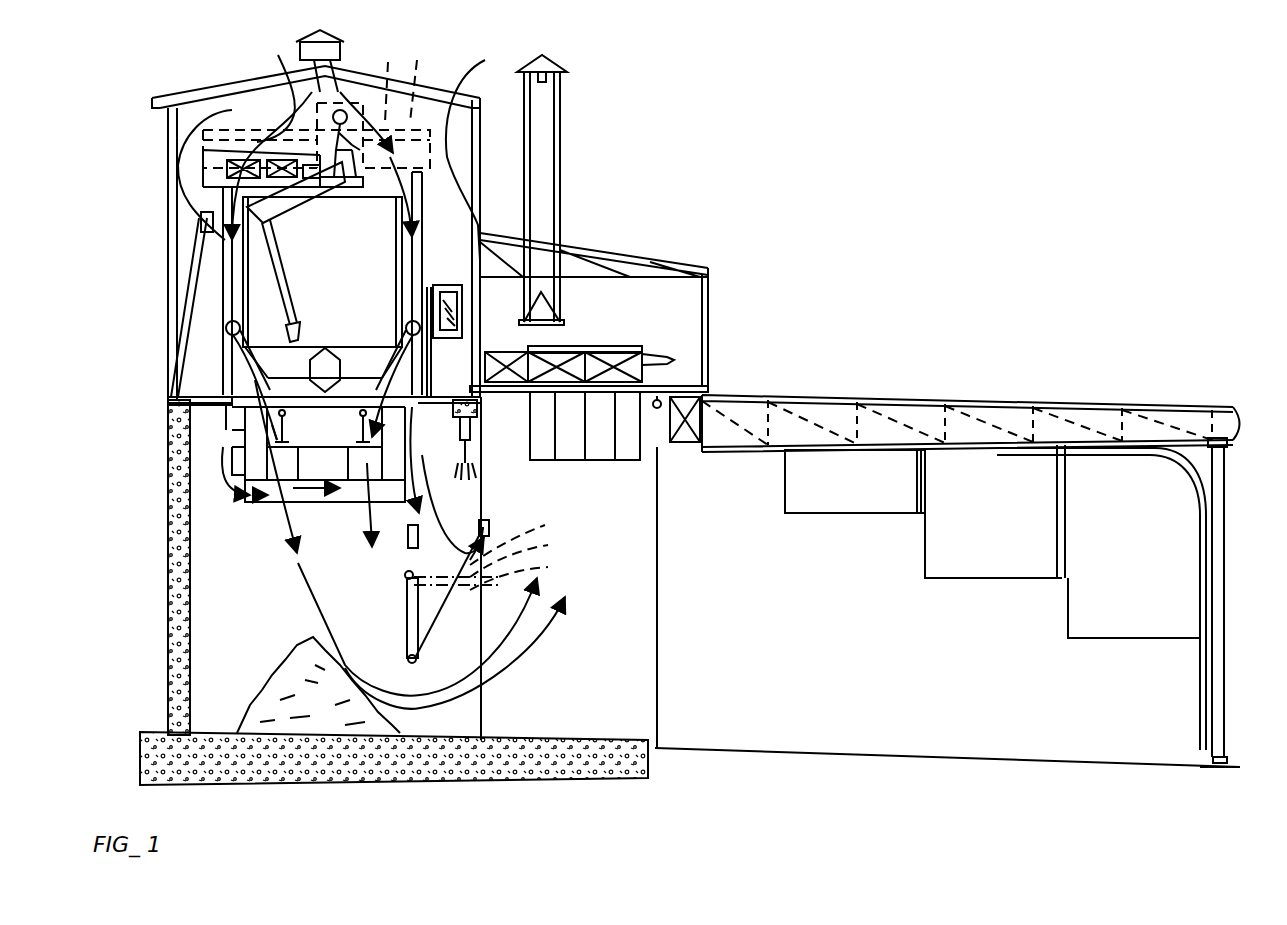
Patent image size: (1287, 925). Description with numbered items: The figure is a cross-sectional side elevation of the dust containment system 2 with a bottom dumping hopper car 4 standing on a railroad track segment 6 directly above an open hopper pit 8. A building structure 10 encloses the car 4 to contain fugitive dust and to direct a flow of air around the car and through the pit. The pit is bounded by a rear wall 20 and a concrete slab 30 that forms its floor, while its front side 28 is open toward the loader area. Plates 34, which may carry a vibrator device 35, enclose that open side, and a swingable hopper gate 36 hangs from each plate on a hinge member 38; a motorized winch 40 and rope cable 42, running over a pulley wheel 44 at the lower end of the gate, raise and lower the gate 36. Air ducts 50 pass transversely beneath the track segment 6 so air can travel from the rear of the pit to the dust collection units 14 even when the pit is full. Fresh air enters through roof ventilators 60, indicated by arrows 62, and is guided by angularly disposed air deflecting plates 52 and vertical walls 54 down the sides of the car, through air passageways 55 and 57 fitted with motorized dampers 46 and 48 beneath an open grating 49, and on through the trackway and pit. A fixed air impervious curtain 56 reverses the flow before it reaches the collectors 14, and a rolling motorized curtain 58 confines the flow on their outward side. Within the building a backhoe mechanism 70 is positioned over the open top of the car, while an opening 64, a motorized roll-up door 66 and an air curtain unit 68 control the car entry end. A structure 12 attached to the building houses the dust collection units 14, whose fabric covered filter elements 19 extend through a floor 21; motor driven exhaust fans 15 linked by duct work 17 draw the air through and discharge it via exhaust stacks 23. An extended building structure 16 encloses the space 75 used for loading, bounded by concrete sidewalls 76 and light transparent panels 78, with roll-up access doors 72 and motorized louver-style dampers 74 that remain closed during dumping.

The dust containment system 2 is at (228, 82).
The hopper car 4 is at (393, 257).
The railroad track segment 6 is at (345, 437).
The hopper pit 8 is at (238, 628).
The building structure 10 is at (160, 180).
The structure 12 is at (625, 246).
The dust collection units 14 is at (618, 343).
The motor driven exhaust fans 15 is at (480, 335).
The extended building structure 16 is at (990, 390).
The duct work 17 is at (578, 358).
The fabric covered filter elements 19 is at (632, 462).
The rear wall 20 is at (170, 662).
The floor 21 is at (680, 388).
The exhaust stacks 23 is at (545, 112).
The front side 28 is at (600, 681).
The concrete slab 30 is at (575, 775).
The plates 34 is at (406, 572).
The vibrator device 35 is at (406, 538).
The swingable hopper gate 36 is at (419, 627).
The hinge member 38 is at (404, 598).
The motorized winch 40 is at (488, 521).
The rope cable 42 is at (436, 610).
The pulley wheel 44 is at (407, 658).
The motorized damper 46 is at (413, 412).
The motorized damper 48 is at (243, 410).
The open grating 49 is at (237, 385).
The air ducts 50 is at (265, 513).
The air deflecting plates 52 is at (342, 153).
The vertical walls 54 is at (236, 280).
The air passageway 55 is at (473, 420).
The fixed air impervious curtain 56 is at (480, 497).
The air passageway 57 is at (228, 406).
The rolling motorized air impervious curtain 58 is at (660, 668).
The roof ventilators 60 is at (345, 46).
The arrows 62 is at (273, 90).
The opening 64 is at (422, 208).
The motorized roll-up door 66 is at (415, 60).
The air curtain unit 68 is at (372, 82).
The backhoe mechanism 70 is at (300, 215).
The roll-up access doors 72 is at (1216, 673).
The motorized louver-style dampers 74 is at (1235, 430).
The space 75 is at (920, 666).
The concrete sidewalls 76 is at (1000, 742).
The light transparent panels 78 is at (935, 540).